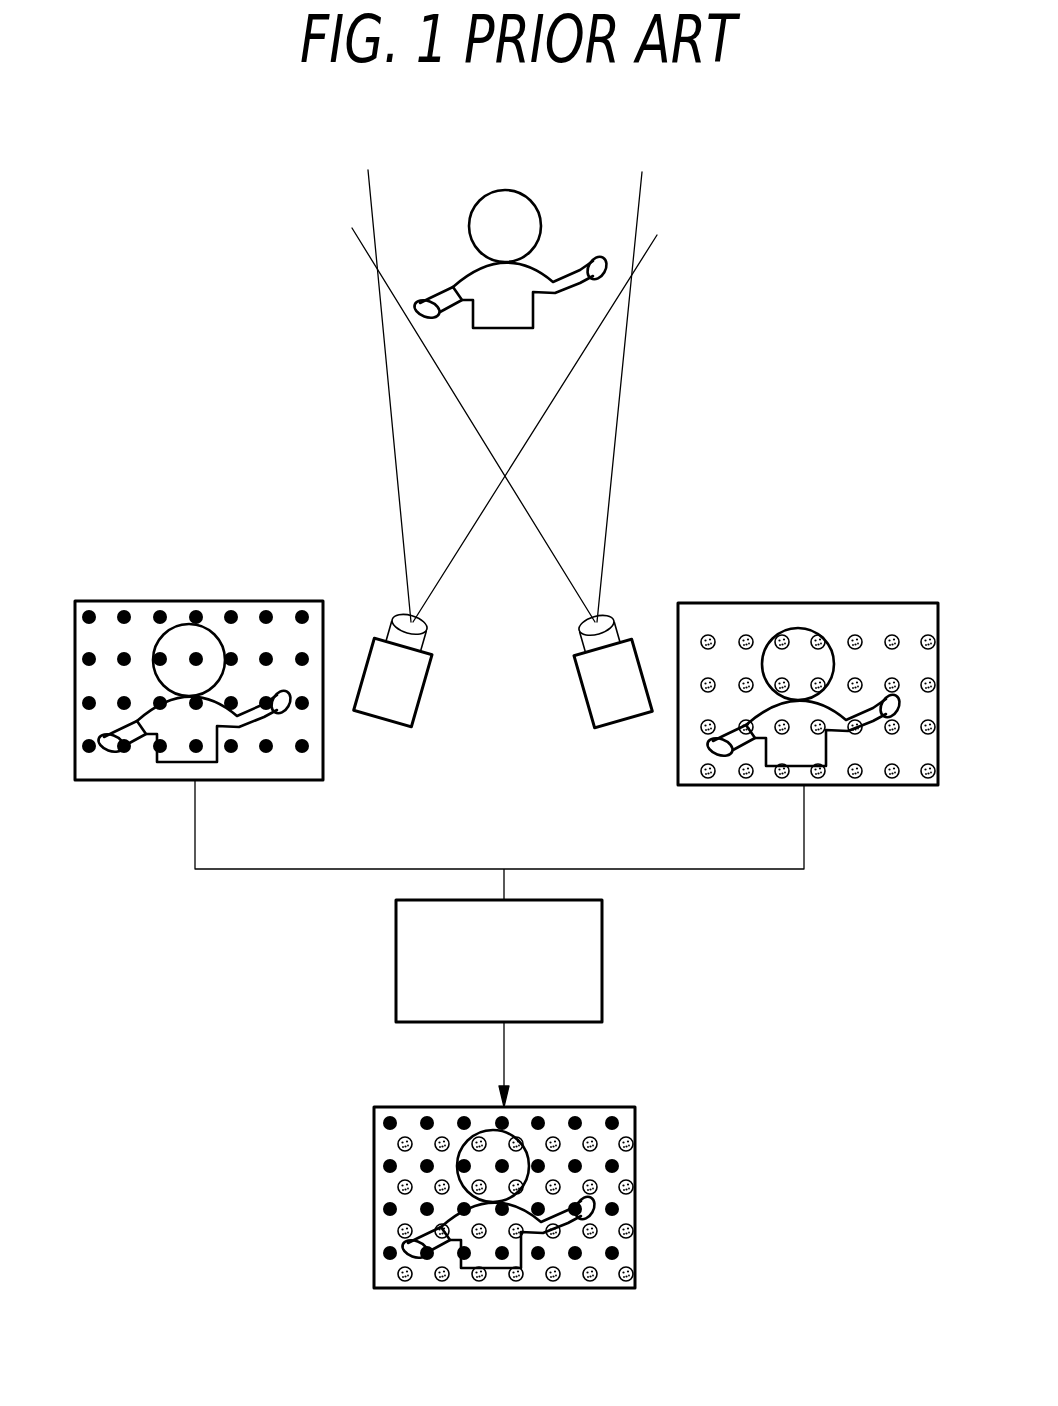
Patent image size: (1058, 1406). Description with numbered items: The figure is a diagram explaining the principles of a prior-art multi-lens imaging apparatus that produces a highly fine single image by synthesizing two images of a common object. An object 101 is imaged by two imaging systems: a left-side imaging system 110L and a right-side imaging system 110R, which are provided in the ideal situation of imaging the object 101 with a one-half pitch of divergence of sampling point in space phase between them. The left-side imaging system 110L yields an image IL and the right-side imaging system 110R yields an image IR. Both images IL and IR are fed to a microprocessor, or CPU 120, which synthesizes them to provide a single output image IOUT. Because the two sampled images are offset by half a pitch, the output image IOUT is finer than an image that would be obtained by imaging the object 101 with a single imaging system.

The object 101 is at (492, 202).
The left-side imaging system 110L is at (372, 722).
The right-side imaging system 110R is at (602, 722).
The CPU 120 is at (602, 1001).
The image IL is at (112, 599).
The image IR is at (723, 601).
The output image IOUT is at (635, 1237).